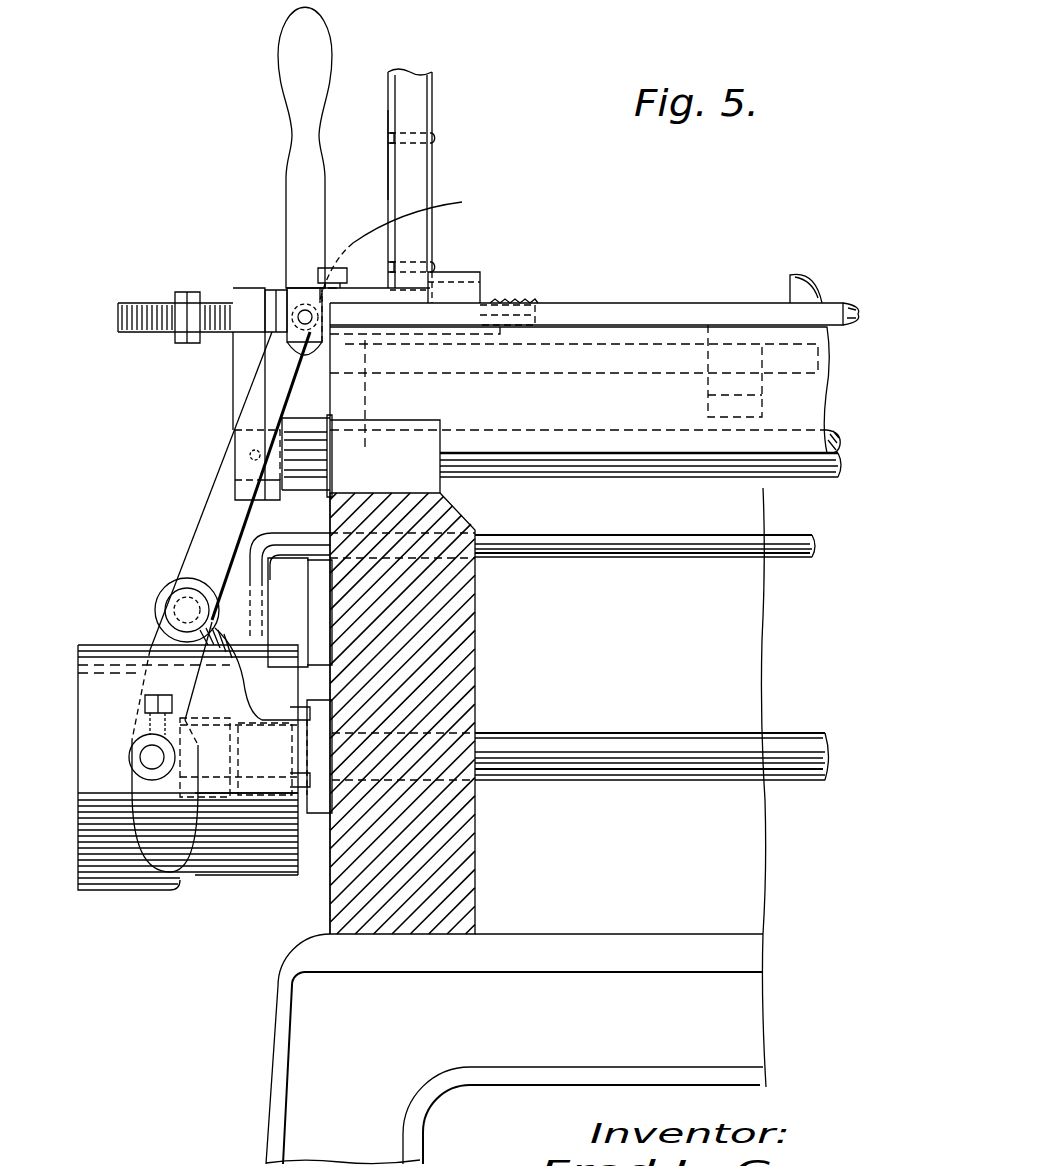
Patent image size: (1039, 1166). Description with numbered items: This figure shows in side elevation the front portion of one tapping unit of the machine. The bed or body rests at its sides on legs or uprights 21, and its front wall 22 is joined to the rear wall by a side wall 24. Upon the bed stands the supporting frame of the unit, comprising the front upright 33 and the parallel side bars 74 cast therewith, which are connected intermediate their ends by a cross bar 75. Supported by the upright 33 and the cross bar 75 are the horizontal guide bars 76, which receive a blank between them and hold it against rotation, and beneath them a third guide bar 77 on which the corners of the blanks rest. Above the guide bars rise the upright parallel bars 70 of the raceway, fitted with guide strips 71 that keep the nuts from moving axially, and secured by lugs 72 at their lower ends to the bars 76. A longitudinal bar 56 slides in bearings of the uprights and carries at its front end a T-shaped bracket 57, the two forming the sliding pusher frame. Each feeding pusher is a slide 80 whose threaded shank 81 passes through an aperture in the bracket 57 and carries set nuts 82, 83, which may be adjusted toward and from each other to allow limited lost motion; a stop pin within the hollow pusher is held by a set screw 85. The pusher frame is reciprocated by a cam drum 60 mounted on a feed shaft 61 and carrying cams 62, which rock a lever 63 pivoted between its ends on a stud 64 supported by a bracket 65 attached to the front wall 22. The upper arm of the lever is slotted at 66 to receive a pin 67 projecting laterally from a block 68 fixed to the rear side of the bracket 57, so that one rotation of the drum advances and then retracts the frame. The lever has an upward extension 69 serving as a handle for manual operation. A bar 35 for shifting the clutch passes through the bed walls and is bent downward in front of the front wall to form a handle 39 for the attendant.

The legs or uprights 21 is at (514, 1049).
The front wall 22 is at (478, 633).
The side wall 24 is at (767, 628).
The upright 33 is at (362, 338).
The bar 35 is at (653, 558).
The handle 39 is at (247, 565).
The longitudinal bar 56 is at (818, 468).
The T-shaped bracket 57 is at (234, 378).
The cam drum 60 is at (248, 870).
The feed shaft 61 is at (647, 743).
The cams 62 is at (115, 892).
The lever 63 is at (234, 442).
The stud 64 is at (177, 600).
The bracket 65 is at (227, 578).
The slot 66 is at (292, 347).
The pin 67 is at (332, 262).
The block 68 is at (302, 290).
The upward extension 69 is at (290, 60).
The upright parallel bars 70 is at (415, 172).
The guide strips 71 is at (458, 100).
The lugs 72 is at (462, 278).
The side bars 74 is at (808, 402).
The cross bar 75 is at (705, 388).
The guide bars 76 is at (618, 318).
The third guide bar 77 is at (532, 377).
The slide 80 is at (363, 297).
The threaded shank 81 is at (133, 303).
The set nut 82 is at (182, 288).
The set nut 83 is at (277, 290).
The set screw 85 is at (406, 244).